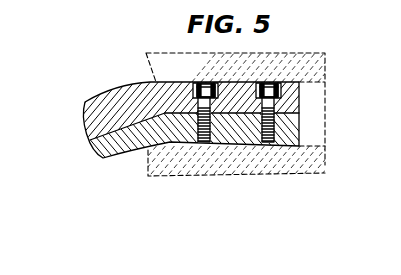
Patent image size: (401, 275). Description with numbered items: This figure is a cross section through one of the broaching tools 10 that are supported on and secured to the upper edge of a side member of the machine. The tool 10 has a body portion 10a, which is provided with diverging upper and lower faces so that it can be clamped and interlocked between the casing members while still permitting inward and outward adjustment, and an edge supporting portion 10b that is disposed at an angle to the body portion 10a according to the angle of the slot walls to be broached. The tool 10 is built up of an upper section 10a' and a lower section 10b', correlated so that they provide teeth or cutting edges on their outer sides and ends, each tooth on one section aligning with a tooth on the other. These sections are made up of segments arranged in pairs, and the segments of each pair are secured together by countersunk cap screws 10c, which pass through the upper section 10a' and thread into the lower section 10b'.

The broaching tool 10 is at (191, 117).
The body portion 10a is at (207, 136).
The upper section 10a' is at (208, 109).
The edge supporting portion 10b is at (116, 148).
The lower section 10b' is at (255, 125).
The countersunk cap screw 10c is at (208, 83).